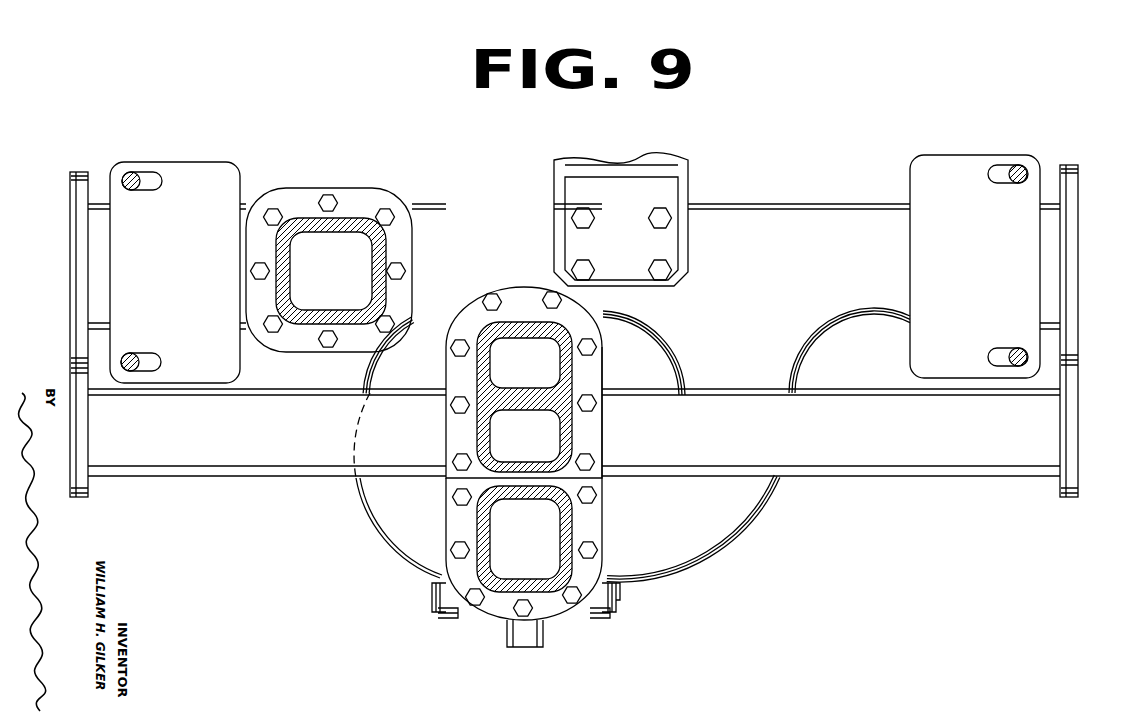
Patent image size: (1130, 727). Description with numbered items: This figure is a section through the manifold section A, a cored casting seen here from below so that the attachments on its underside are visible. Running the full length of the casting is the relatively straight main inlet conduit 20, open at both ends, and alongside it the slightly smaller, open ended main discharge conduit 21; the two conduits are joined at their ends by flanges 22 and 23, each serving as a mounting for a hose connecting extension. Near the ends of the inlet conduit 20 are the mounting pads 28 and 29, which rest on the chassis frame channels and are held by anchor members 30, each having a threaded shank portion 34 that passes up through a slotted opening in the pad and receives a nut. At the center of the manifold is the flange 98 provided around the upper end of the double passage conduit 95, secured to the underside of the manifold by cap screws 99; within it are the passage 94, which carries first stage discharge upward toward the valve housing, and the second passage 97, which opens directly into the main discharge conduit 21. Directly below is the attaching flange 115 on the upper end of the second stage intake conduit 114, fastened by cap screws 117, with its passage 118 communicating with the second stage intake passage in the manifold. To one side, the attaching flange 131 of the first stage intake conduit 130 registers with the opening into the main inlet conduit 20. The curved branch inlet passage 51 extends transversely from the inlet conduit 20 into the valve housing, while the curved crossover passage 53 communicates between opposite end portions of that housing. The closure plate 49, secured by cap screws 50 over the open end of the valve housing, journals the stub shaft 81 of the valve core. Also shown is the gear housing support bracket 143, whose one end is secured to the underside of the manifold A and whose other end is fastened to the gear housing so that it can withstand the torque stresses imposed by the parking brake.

The main inlet conduit 20 is at (481, 226).
The main discharge conduit 21 is at (750, 438).
The flange 22 is at (78, 183).
The flange 23 is at (1068, 427).
The mounting pad 28 is at (194, 283).
The mounting pad 29 is at (992, 261).
The anchor member 30 is at (140, 191).
The shank portion 34 is at (153, 176).
The closure plate 49 is at (620, 607).
The cap screw 50 is at (452, 618).
The branch inlet passage 51 is at (777, 489).
The crossover passage 53 is at (384, 488).
The stub shaft 81 is at (524, 646).
The passage 94 is at (527, 340).
The double passage conduit 95 is at (473, 381).
The passage 97 is at (538, 440).
The flange 98 is at (596, 423).
The cap screw 99 is at (488, 297).
The second stage intake conduit 114 is at (575, 528).
The attaching flange 115 is at (453, 580).
The cap screw 117 is at (460, 548).
The passage 118 is at (553, 545).
The intake conduit 130 is at (375, 249).
The attaching flange 131 is at (352, 198).
The gear housing support bracket 143 is at (652, 176).
The manifold section A is at (390, 515).